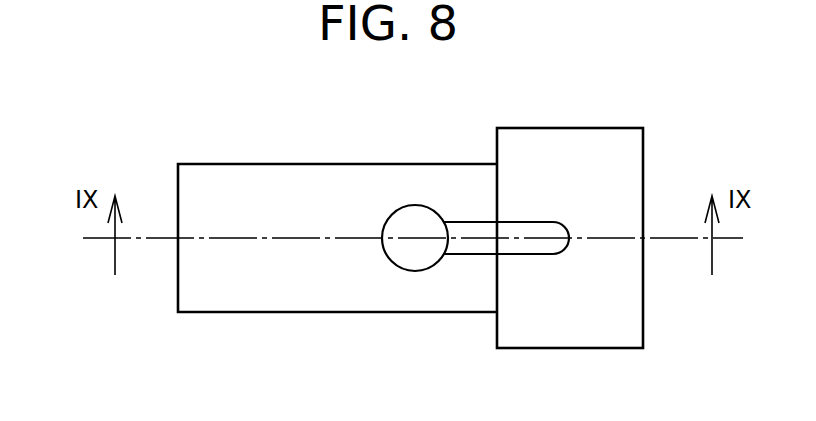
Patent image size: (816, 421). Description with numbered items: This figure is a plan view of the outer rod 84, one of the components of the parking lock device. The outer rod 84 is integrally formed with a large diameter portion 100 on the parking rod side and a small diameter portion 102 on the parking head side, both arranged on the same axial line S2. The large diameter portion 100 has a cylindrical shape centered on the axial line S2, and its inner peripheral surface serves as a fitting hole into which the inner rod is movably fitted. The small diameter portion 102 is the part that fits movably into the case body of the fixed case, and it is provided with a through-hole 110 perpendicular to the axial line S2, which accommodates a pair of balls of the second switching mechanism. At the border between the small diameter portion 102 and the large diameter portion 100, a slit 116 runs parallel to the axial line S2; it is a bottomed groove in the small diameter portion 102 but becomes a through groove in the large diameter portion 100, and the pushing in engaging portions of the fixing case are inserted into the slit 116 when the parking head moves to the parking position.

The outer rod 84 is at (373, 240).
The large diameter portion 100 is at (573, 160).
The small diameter portion 102 is at (287, 275).
The through-hole 110 is at (412, 267).
The slit 116 is at (540, 254).
The axial line S2 is at (394, 240).